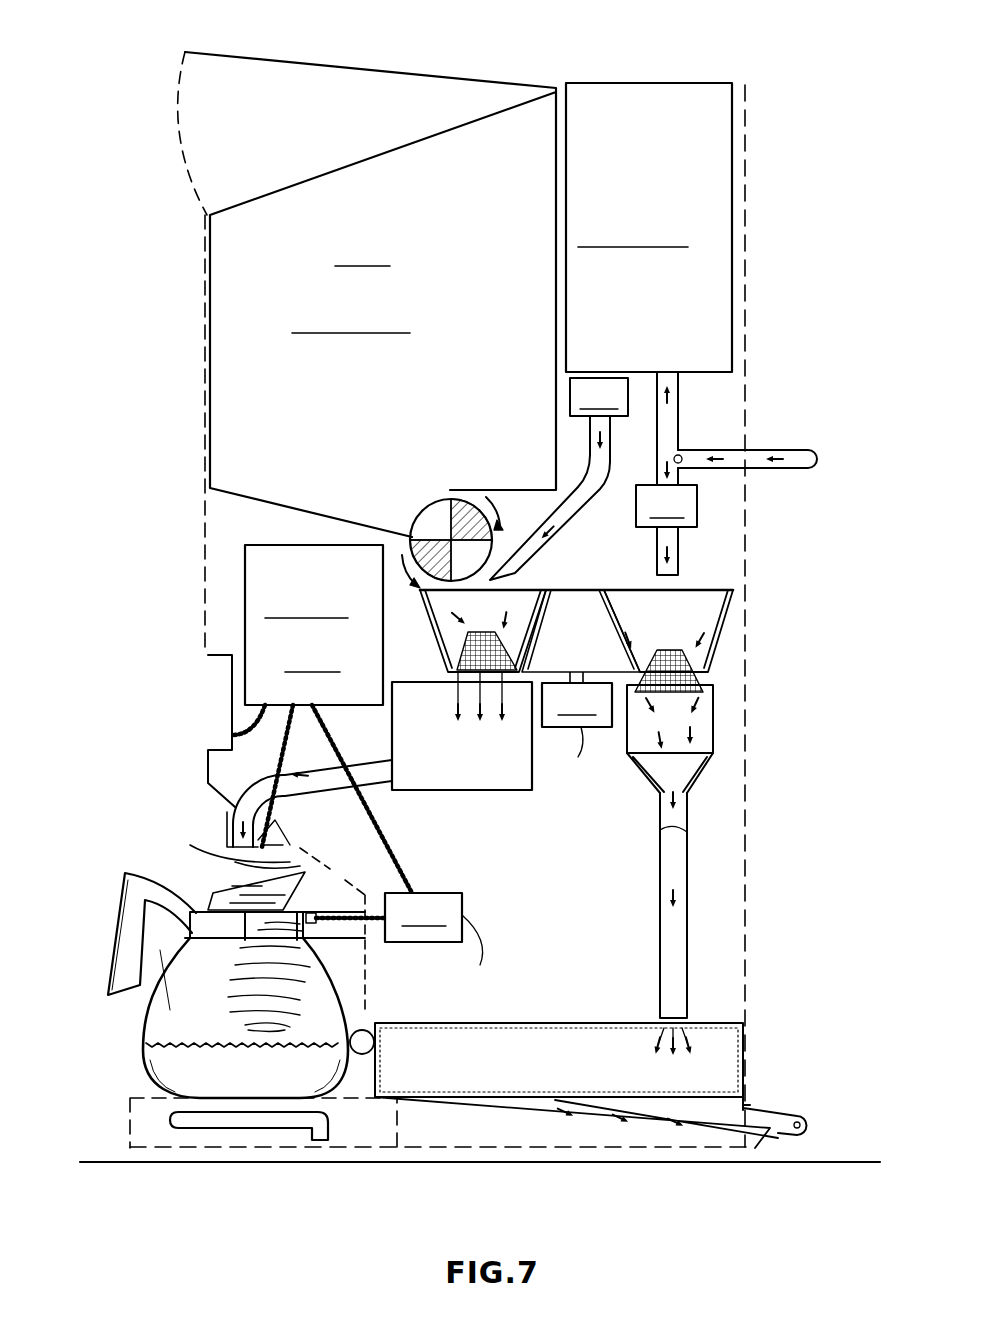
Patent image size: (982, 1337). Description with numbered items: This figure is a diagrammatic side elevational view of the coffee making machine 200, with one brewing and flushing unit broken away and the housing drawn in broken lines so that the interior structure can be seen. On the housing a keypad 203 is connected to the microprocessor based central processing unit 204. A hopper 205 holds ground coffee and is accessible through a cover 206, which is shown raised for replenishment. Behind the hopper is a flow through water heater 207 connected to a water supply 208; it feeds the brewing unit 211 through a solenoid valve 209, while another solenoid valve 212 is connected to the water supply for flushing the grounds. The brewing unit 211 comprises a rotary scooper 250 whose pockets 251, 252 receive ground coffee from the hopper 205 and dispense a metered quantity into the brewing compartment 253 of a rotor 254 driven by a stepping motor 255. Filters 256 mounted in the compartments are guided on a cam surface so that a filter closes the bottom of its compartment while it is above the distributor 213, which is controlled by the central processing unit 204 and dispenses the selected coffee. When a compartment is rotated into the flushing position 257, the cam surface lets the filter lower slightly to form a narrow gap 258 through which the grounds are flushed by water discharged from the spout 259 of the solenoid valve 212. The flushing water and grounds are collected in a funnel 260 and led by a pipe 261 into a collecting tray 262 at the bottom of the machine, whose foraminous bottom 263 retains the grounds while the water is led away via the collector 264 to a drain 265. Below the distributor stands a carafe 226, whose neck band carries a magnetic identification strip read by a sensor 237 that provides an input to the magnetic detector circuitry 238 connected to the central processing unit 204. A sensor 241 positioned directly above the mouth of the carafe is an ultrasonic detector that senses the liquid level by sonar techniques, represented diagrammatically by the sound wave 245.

The coffee making machine 200 is at (186, 285).
The keypad 203 is at (215, 710).
The central processing unit 204 is at (328, 719).
The hopper 205 is at (370, 294).
The cover 206 is at (215, 100).
The flow through water heater 207 is at (708, 150).
The water supply 208 is at (816, 462).
The solenoid valve 209 is at (559, 479).
The brewing unit 211 is at (566, 810).
The solenoid valve 212 is at (666, 506).
The distributor 213 is at (492, 776).
The carafe 226 is at (150, 1042).
The sensor 237 is at (300, 935).
The magnetic detector circuitry 238 is at (454, 949).
The sensor 241 is at (245, 855).
The sound wave 245 is at (250, 1009).
The rotary scooper 250 is at (475, 500).
The pocket 251 is at (437, 517).
The pocket 252 is at (487, 553).
The brewing compartment 253 is at (446, 662).
The rotor 254 is at (584, 590).
The stepping motor 255 is at (583, 745).
The filter 256 is at (487, 648).
The flushing position 257 is at (732, 682).
The gap 258 is at (633, 660).
The spout 259 is at (676, 550).
The funnel 260 is at (700, 757).
The pipe 261 is at (684, 893).
The collecting tray 262 is at (743, 1023).
The foraminous bottom 263 is at (710, 1088).
The collector 264 is at (712, 1112).
The drain 265 is at (795, 1138).